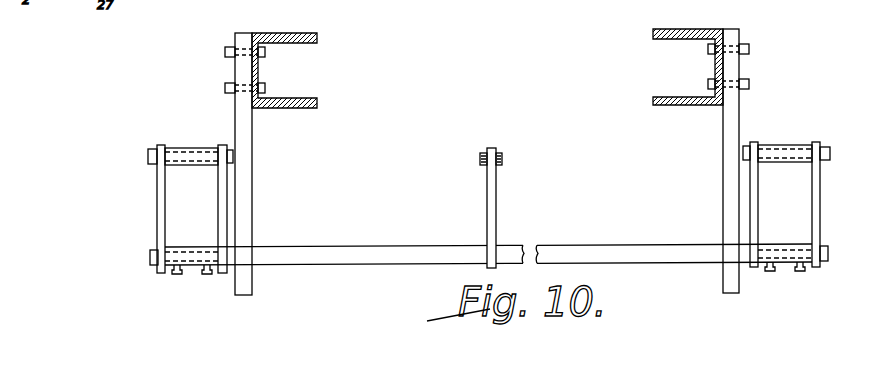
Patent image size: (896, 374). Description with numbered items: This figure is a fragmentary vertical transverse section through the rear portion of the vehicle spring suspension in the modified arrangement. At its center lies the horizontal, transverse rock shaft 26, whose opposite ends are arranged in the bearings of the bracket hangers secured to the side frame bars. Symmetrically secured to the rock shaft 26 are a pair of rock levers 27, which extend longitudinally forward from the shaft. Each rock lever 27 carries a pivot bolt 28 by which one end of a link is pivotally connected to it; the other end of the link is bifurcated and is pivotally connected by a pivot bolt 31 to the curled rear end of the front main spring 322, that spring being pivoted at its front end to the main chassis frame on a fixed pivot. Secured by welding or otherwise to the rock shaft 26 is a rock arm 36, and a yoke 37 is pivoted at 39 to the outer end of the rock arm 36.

The rock shaft 26 is at (350, 247).
The rock levers 27 is at (190, 276).
The pivot bolt 28 is at (150, 256).
The pivot bolt 31 is at (148, 154).
The front main spring 322 is at (192, 146).
The rock arm 36 is at (496, 198).
The yoke 37 is at (495, 150).
The pivot 39 is at (502, 160).